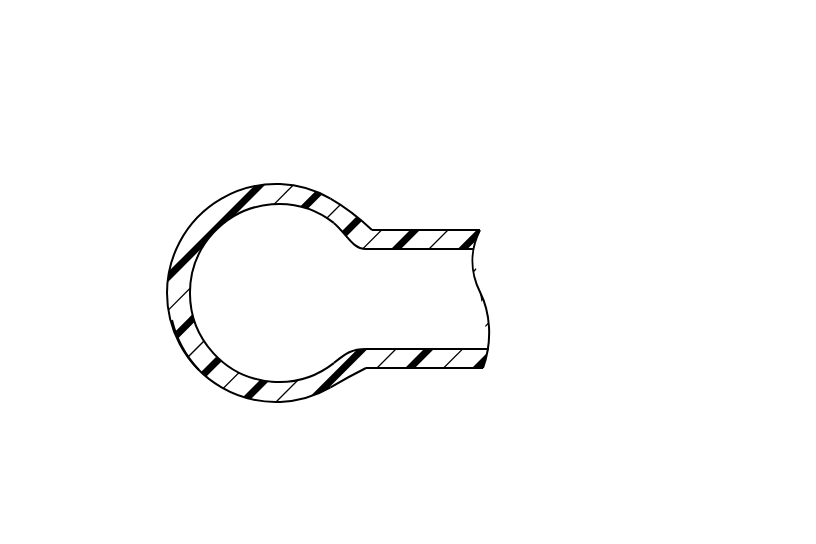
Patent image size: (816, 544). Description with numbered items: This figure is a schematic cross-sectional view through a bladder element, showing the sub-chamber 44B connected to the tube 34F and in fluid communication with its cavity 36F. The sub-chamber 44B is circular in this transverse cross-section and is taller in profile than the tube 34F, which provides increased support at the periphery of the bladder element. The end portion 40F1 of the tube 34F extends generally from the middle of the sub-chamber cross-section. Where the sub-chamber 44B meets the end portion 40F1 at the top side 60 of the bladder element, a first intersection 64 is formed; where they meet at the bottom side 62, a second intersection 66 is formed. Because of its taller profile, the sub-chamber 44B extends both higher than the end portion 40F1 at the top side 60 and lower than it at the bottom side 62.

The top side 60 is at (318, 162).
The sub-chamber 44B is at (213, 211).
The bottom side 62 is at (190, 390).
The first intersection 64 is at (372, 229).
The second intersection 66 is at (364, 370).
The tube 34F is at (420, 229).
The cavity 36F is at (460, 308).
The end portion 40F1 is at (392, 348).